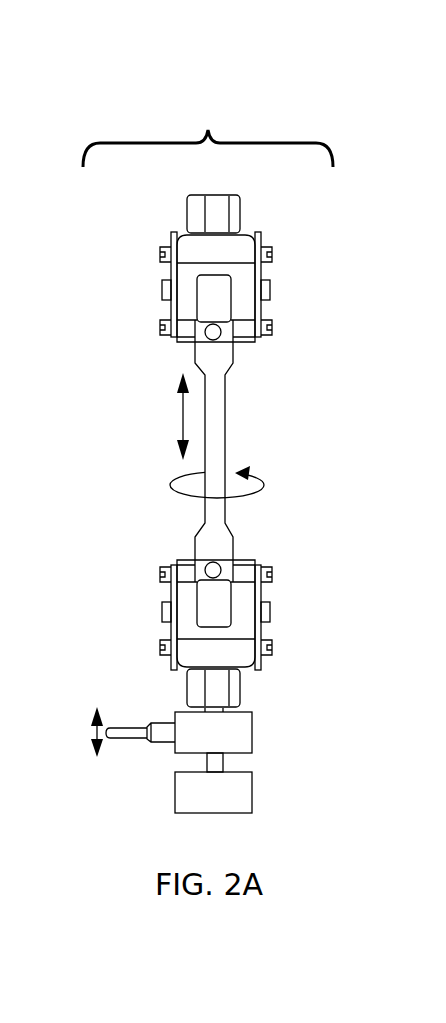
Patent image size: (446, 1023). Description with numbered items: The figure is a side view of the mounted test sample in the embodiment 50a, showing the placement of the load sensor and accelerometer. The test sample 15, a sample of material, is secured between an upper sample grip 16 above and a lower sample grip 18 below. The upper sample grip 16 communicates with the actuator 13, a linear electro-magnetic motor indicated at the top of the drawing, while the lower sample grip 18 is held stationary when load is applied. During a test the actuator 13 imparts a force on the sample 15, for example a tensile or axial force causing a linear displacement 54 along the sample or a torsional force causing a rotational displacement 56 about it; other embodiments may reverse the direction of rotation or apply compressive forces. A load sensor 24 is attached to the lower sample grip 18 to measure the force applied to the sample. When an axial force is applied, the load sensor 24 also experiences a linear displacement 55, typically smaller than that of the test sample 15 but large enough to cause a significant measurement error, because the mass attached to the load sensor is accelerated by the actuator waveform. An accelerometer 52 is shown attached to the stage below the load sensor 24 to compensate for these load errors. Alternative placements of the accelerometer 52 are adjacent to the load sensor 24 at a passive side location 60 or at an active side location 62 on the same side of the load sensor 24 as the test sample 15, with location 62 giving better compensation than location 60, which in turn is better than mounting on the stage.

The embodiment 50a is at (326, 48).
The actuator 13 is at (208, 129).
The upper sample grip 16 is at (272, 283).
The test sample 15 is at (213, 399).
The linear displacement 54 is at (183, 423).
The rotational displacement 56 is at (170, 485).
The lower sample grip 18 is at (270, 610).
The active side location 62 is at (223, 712).
The load sensor 24 is at (213, 732).
The linear displacement 55 is at (92, 733).
The passive side location 60 is at (223, 755).
The accelerometer 52 is at (213, 792).